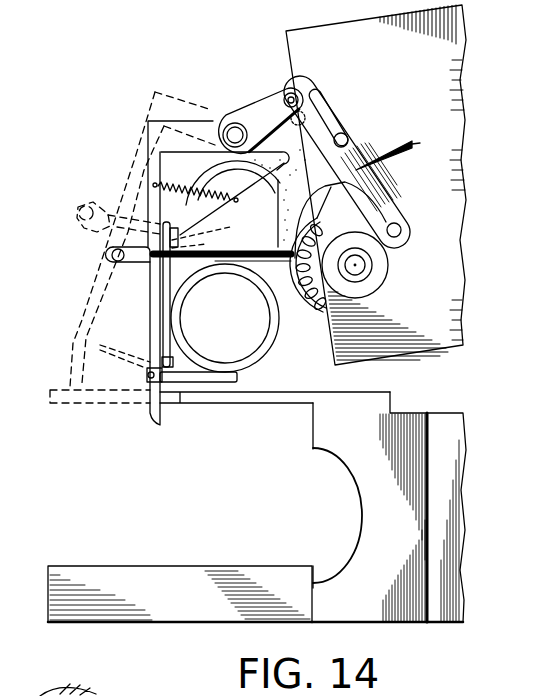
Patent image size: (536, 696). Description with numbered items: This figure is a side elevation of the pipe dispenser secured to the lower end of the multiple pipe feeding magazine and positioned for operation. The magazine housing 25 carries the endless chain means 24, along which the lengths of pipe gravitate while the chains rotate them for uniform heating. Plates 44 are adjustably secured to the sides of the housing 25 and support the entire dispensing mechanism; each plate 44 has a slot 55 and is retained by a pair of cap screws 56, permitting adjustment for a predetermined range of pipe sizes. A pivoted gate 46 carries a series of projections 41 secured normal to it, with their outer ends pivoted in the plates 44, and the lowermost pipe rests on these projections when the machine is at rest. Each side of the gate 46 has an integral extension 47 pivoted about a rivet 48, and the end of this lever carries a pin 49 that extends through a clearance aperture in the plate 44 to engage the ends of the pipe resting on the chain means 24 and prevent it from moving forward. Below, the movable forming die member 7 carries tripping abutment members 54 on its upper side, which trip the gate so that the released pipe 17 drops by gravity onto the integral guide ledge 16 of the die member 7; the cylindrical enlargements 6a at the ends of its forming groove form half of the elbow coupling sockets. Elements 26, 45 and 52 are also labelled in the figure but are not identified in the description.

The cylindrical enlargements 6a is at (352, 482).
The movable forming second die member 7 is at (400, 537).
The integral guide ledge 16 is at (186, 599).
The pipe 17 is at (217, 172).
The endless chain means 24 is at (312, 300).
The housing 25 is at (422, 62).
The pulley 26 is at (312, 272).
The projections 41 is at (118, 345).
The plates 44 is at (281, 95).
The plate 45 is at (65, 372).
The gate 46 is at (130, 172).
The integral extension 47 is at (257, 113).
The rivet 48 is at (230, 128).
The pin 49 is at (288, 94).
The rod 52 is at (250, 239).
The tripping abutment members 54 is at (173, 400).
The slot 55 is at (405, 149).
The cap screws 56 is at (348, 137).